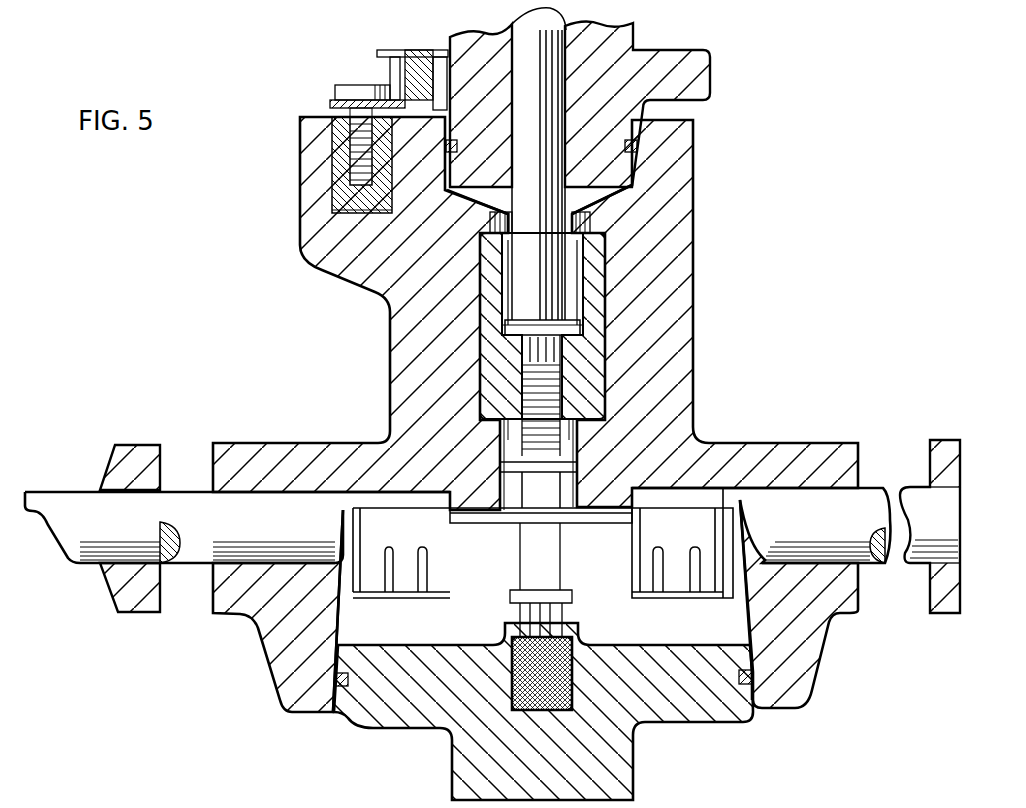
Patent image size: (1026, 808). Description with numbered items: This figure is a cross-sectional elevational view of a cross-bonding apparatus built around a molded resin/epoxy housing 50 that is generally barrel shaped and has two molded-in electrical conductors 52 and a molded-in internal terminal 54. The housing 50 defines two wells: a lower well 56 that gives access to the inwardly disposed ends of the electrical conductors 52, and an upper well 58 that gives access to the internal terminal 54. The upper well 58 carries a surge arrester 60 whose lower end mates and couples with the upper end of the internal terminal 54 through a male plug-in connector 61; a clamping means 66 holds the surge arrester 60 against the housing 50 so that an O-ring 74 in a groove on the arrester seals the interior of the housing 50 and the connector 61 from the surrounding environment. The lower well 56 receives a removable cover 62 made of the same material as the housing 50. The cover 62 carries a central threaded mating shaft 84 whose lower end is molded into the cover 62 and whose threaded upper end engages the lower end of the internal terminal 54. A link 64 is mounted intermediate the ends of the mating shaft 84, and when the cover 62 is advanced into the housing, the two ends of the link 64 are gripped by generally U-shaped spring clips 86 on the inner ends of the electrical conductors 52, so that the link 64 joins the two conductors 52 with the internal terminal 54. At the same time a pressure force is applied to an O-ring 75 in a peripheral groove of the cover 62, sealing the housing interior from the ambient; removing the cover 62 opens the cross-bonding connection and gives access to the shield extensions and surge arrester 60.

The housing 50 is at (682, 275).
The electrical conductors 52 is at (176, 555).
The internal terminal 54 is at (604, 372).
The lower well 56 is at (738, 598).
The upper well 58 is at (612, 197).
The surge arrester 60 is at (710, 90).
The plug-in connector 61 is at (590, 300).
The cover 62 is at (678, 715).
The link 64 is at (605, 567).
The clamping means 66 is at (316, 73).
The O-ring 74 is at (640, 150).
The O-ring 75 is at (753, 680).
The mating shaft 84 is at (605, 405).
The spring clips 86 is at (412, 585).